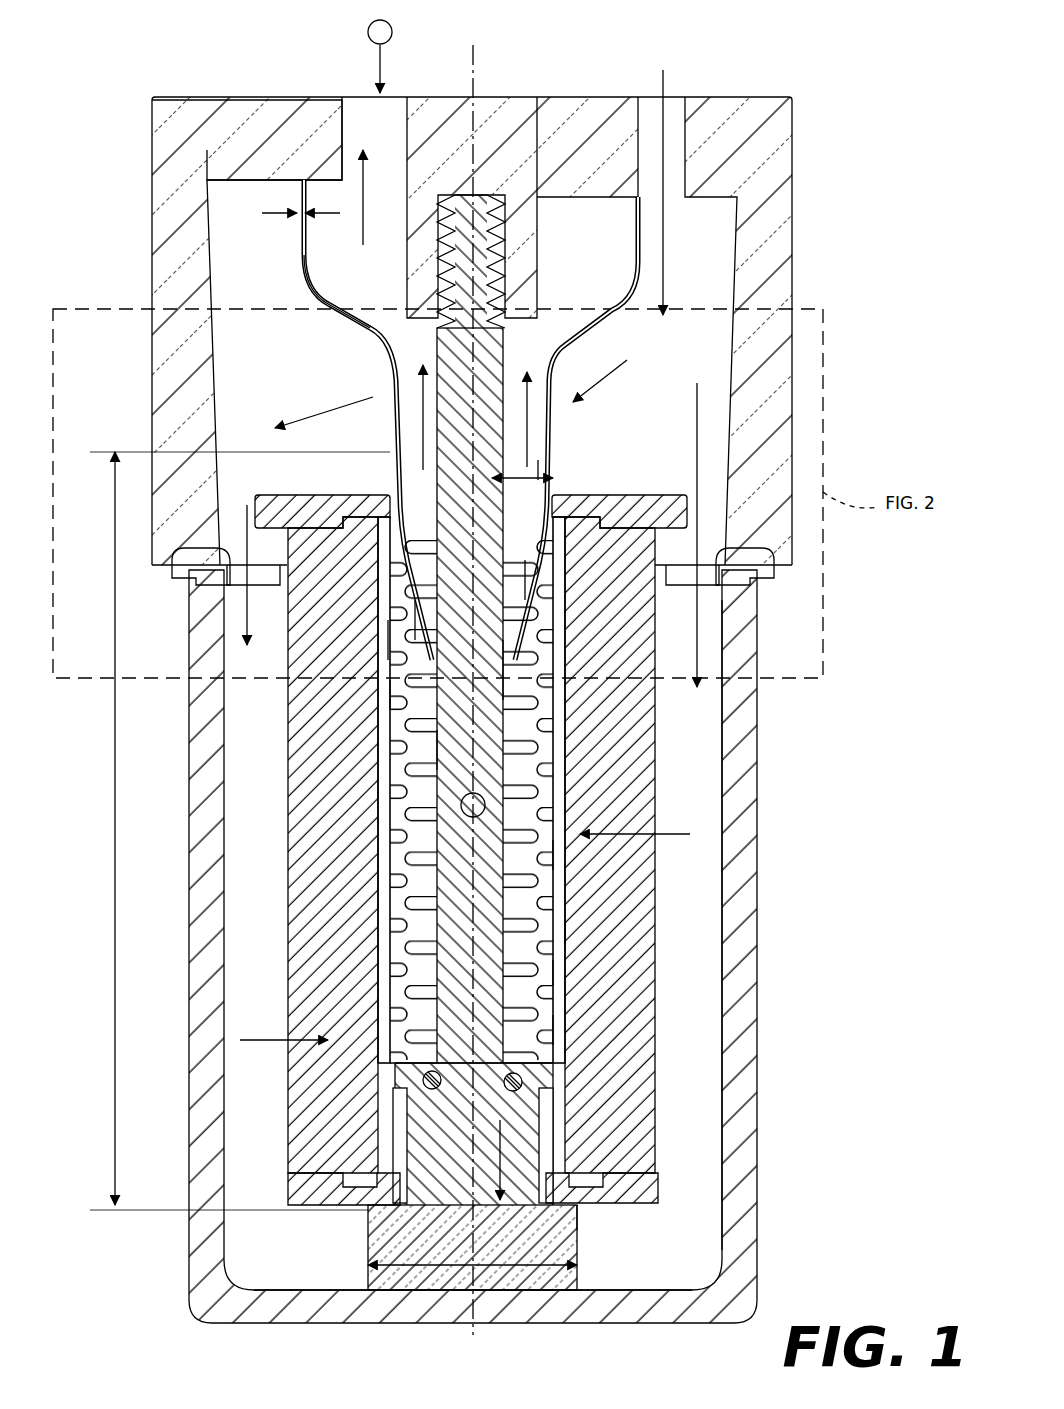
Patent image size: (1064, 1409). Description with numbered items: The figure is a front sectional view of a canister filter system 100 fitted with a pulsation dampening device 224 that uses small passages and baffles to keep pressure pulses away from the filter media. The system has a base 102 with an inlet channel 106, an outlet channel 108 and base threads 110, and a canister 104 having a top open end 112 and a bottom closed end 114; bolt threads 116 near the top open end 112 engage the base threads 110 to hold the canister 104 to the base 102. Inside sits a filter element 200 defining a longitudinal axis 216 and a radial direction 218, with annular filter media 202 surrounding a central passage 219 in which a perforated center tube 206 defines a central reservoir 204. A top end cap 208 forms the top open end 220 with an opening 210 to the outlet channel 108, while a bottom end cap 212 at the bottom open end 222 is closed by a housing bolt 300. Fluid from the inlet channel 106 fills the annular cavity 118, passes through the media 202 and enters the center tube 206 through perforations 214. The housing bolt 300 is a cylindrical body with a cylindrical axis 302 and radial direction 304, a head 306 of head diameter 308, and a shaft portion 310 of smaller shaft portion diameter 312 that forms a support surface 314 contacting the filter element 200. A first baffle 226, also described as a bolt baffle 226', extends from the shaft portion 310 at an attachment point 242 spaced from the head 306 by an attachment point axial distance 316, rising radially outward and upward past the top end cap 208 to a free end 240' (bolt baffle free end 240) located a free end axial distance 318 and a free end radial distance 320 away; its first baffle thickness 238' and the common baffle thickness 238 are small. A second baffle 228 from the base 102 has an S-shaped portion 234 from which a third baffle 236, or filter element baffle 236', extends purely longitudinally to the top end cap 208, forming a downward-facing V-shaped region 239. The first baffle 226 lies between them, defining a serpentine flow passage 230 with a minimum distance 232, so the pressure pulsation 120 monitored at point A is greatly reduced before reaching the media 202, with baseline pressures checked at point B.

The canister filter system 100 is at (508, 72).
The base 102 is at (763, 105).
The canister 104 is at (757, 1052).
The inlet channel 106 is at (678, 105).
The outlet channel 108 is at (355, 98).
The base threads 110 is at (478, 232).
The top open end 112 is at (247, 480).
The bottom closed end 114 is at (660, 1325).
The bolt threads 116 is at (488, 252).
The annular cavity 118 is at (715, 940).
The pressure pulsation 120 is at (378, 80).
The filter element 200 is at (600, 490).
The annular filter media 202 is at (625, 1002).
The central reservoir 204 is at (560, 932).
The center tube 206 is at (550, 972).
The top end cap 208 is at (665, 496).
The opening 210 is at (442, 452).
The bottom end cap 212 is at (620, 1205).
The perforations 214 is at (550, 858).
The longitudinal axis 216 is at (473, 1332).
The radial direction 218 is at (495, 1020).
The central passage 219 is at (560, 1108).
The top open end 220 is at (499, 468).
The bottom open end 222 is at (576, 1198).
The pulsation dampening device 224 is at (390, 462).
The first baffle 226 is at (446, 635).
The bolt baffle 226' is at (496, 565).
The second baffle 228 is at (358, 338).
The flow passage 230 is at (440, 440).
The minimum distance 232 is at (597, 470).
The S-shaped portion 234 is at (378, 328).
The third baffle 236 is at (426, 432).
The filter element baffle 236' is at (574, 450).
The thickness 238 is at (288, 237).
The first baffle thickness 238' is at (362, 645).
The V-shaped region 239 is at (393, 420).
The bolt baffle free end 240 is at (576, 428).
The free end 240' is at (410, 402).
The attachment point 242 is at (392, 690).
The housing bolt 300 is at (480, 780).
The cylindrical axis 302 is at (480, 618).
The radial direction 304 is at (455, 948).
The head 306 is at (535, 1280).
The head diameter 308 is at (430, 1265).
The shaft portion 310 is at (470, 1182).
The shaft portion diameter 312 is at (440, 1090).
The support surface 314 is at (430, 1120).
The attachment point axial distance 316 is at (520, 812).
The free end axial distance 318 is at (115, 545).
The free end radial distance 320 is at (435, 750).